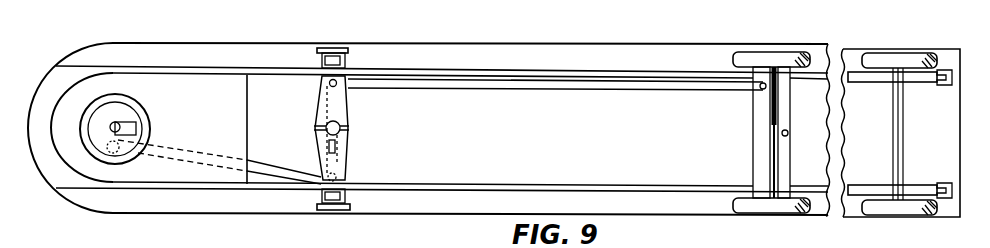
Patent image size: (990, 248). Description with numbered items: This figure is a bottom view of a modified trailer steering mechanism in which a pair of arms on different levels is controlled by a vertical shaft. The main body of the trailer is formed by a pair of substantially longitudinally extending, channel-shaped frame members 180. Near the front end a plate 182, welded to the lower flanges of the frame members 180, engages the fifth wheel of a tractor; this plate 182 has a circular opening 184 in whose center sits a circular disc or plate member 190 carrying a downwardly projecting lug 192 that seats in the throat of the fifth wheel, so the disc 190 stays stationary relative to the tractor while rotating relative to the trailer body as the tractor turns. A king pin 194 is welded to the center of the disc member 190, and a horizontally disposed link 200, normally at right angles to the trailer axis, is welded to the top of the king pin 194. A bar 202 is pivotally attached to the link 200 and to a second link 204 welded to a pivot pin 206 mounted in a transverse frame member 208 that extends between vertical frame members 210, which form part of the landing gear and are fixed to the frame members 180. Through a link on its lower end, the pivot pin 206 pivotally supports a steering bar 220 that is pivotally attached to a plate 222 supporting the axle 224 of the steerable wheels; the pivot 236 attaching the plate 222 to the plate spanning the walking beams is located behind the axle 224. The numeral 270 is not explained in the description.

The frame members 180 is at (534, 72).
The plate 182 is at (50, 166).
The circular opening 184 is at (87, 120).
The circular disc or plate member 190 is at (133, 118).
The downwardly projecting lug 192 is at (137, 130).
The king pin 194 is at (117, 123).
The horizontally disposed link 200 is at (108, 138).
The bar 202 is at (287, 159).
The second link 204 is at (338, 157).
The pivot pin 206 is at (347, 127).
The transverse frame member 208 is at (320, 103).
The vertical frame members 210 is at (346, 62).
The steering bar 220 is at (502, 82).
The plate 222 is at (758, 100).
The axle 224 is at (789, 133).
The pivot 236 is at (782, 134).
The carriage assembly 270 is at (771, 150).